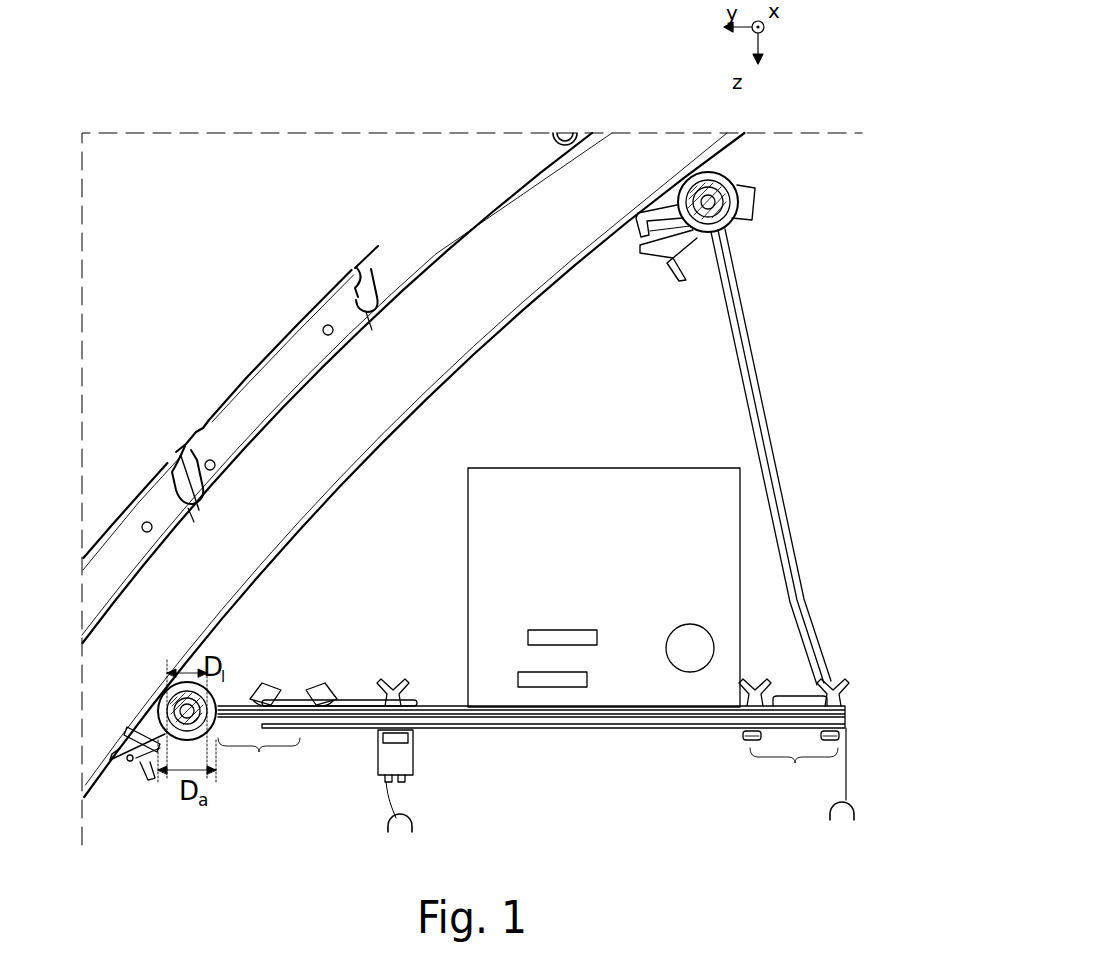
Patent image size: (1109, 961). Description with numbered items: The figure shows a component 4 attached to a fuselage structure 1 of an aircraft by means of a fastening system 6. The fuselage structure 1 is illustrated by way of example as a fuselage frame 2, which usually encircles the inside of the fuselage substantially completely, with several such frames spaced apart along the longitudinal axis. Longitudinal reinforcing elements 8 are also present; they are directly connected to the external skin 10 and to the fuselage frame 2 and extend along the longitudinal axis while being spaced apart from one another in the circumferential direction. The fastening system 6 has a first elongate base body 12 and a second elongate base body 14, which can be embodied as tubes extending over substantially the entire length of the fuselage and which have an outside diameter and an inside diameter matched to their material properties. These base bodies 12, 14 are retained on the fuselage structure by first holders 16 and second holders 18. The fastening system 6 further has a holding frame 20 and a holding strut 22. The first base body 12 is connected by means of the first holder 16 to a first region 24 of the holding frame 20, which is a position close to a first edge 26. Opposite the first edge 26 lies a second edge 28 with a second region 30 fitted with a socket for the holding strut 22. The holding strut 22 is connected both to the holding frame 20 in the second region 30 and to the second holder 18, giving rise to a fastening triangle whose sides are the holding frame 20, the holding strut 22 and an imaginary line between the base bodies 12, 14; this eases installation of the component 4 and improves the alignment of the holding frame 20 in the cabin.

The fuselage structure 1 is at (337, 228).
The fuselage frame 2 is at (497, 250).
The component 4 is at (631, 444).
The fastening system 6 is at (796, 457).
The longitudinal reinforcing elements 8 is at (369, 282).
The external skin 10 is at (291, 330).
The first elongate base body 12 is at (206, 703).
The second elongate base body 14 is at (726, 190).
The first holder 16 is at (168, 742).
The second holder 18 is at (705, 166).
The holding frame 20 is at (626, 733).
The holding strut 22 is at (786, 500).
The first region 24 is at (259, 762).
The first edge 26 is at (268, 707).
The second edge 28 is at (855, 699).
The second region 30 is at (791, 766).